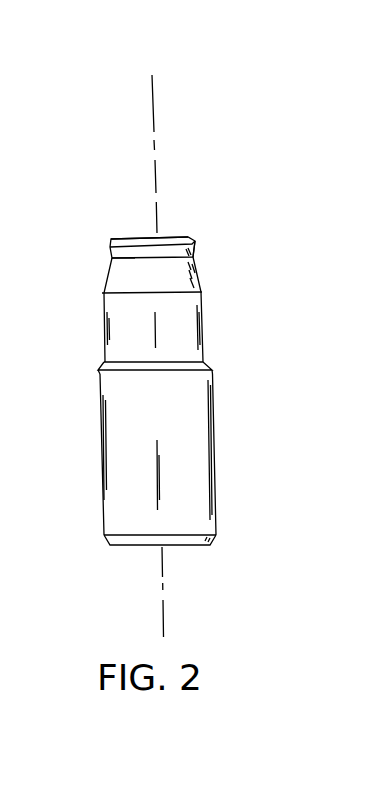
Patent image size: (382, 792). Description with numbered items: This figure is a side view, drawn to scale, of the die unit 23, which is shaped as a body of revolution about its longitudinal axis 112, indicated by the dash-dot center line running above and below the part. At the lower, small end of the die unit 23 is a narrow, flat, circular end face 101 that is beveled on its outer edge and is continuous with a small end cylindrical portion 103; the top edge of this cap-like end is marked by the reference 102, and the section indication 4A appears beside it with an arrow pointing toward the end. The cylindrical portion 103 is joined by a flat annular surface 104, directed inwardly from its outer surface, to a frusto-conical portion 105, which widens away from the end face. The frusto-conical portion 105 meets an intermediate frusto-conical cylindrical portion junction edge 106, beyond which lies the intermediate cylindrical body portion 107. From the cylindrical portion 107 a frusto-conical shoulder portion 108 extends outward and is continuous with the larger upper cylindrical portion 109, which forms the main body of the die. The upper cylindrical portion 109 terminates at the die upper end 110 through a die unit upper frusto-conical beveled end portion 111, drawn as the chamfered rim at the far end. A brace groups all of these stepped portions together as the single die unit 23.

The longitudinal axis 112 is at (153, 113).
The circular end face 101 is at (158, 236).
The cap top edge 102 is at (183, 236).
The small end cylindrical portion 103 is at (194, 243).
The flat annular surface 104 is at (134, 259).
The frusto-conical portion 105 is at (214, 263).
The frusto-conical cylindrical portion junction edge 106 is at (201, 297).
The intermediate cylindrical body portion 107 is at (201, 332).
The frusto-conical shoulder portion 108 is at (203, 362).
The upper cylindrical portion 109 is at (214, 432).
The die upper end 110 is at (142, 547).
The upper frusto-conical beveled end portion 111 is at (212, 543).
The section view indicator 4A is at (107, 238).
The die unit 23 is at (272, 205).